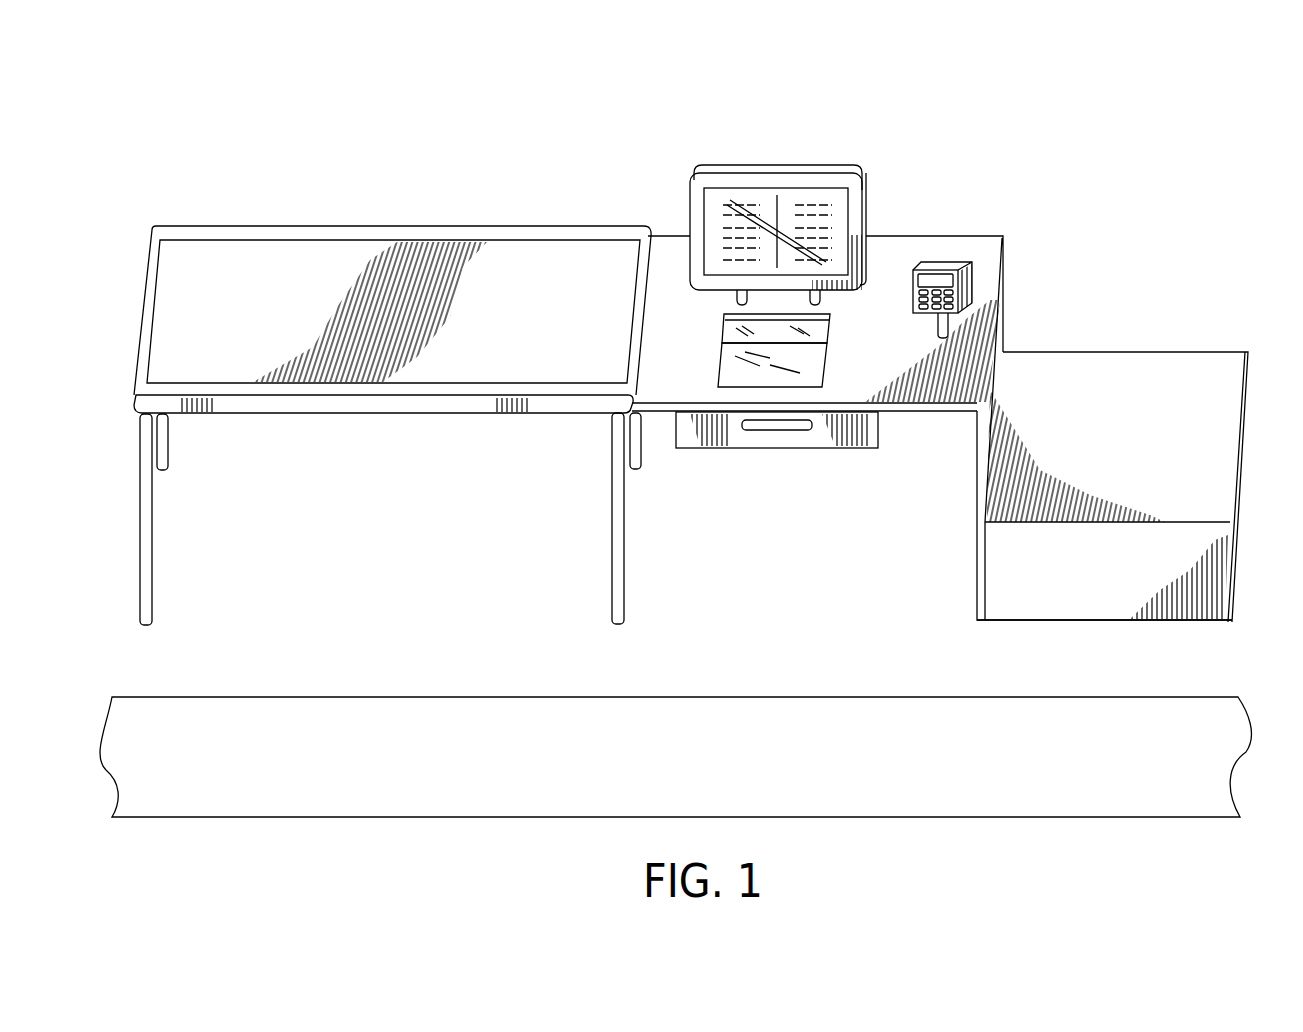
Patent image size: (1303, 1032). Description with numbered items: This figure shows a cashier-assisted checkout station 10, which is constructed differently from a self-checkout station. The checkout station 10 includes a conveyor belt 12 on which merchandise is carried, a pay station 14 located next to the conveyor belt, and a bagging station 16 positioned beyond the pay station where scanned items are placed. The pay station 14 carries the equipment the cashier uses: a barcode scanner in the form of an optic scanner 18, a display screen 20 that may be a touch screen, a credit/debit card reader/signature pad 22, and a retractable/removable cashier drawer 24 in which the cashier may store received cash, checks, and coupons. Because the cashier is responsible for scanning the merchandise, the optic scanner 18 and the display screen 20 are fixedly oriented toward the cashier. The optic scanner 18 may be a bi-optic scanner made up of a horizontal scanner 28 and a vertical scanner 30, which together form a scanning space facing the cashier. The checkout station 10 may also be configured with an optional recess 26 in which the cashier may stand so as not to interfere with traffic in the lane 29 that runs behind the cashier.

The cashier-assisted checkout station 10 is at (534, 126).
The conveyor belt 12 is at (263, 263).
The pay station 14 is at (928, 236).
The bagging station 16 is at (1160, 352).
The optic scanner 18 is at (847, 355).
The display screen 20 is at (800, 195).
The credit/debit card reader/signature pad 22 is at (937, 280).
The retractable/removable cashier drawer 24 is at (790, 446).
The recess 26 is at (877, 656).
The horizontal scanner 28 is at (722, 366).
The lane 29 is at (697, 764).
The vertical scanner 30 is at (724, 330).